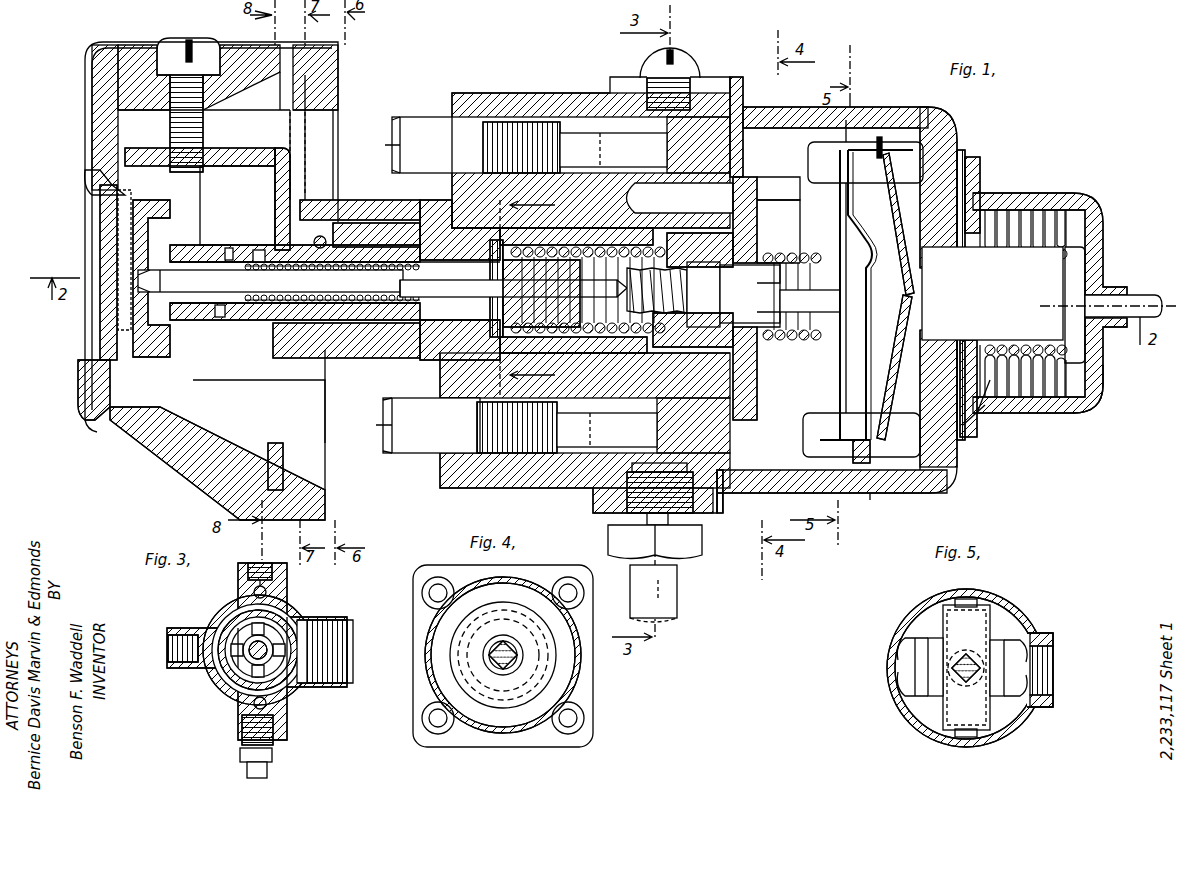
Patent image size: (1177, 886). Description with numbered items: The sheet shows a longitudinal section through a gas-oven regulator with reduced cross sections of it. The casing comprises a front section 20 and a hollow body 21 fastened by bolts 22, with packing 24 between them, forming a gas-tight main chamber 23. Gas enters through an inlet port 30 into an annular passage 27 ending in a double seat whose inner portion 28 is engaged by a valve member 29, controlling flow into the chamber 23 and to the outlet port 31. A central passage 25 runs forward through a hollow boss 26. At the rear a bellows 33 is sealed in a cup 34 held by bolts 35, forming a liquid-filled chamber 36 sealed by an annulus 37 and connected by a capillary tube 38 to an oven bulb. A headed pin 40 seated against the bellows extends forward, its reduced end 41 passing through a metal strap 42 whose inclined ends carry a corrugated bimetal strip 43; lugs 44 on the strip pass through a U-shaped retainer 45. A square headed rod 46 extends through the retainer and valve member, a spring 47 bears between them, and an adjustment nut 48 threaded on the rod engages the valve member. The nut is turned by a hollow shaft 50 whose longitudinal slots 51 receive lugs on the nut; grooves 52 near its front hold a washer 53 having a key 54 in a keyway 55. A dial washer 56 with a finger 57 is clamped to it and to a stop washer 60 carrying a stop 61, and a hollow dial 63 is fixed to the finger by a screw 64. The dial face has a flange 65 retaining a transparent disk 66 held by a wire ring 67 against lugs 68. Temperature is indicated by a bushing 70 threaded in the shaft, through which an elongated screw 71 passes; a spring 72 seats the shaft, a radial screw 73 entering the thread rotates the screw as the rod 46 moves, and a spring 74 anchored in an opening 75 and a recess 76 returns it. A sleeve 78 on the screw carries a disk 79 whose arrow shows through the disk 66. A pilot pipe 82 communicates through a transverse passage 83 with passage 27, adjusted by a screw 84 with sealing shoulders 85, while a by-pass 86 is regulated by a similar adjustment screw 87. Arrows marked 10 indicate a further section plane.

In FIG. 1, the passage 10 is at (532, 294).
In FIG. 1, the front section 20 is at (505, 98).
In FIG. 3, the front section 20 is at (215, 680).
In FIG. 1, the hollow body 21 is at (890, 115).
In FIG. 4, the hollow body 21 is at (575, 700).
In FIG. 5, the hollow body 21 is at (940, 735).
In FIG. 4, the bolts 22 is at (566, 727).
In FIG. 1, the main chamber 23 is at (760, 105).
In FIG. 1, the packing 24 is at (720, 513).
In FIG. 1, the central passage 25 is at (548, 345).
In FIG. 1, the hollow boss 26 is at (378, 330).
In FIG. 1, the annular passage 27 is at (700, 180).
In FIG. 3, the annular passage 27 is at (290, 675).
In FIG. 4, the annular passage 27 is at (555, 678).
In FIG. 1, the inner annular portion 28 is at (760, 373).
In FIG. 4, the inner annular portion 28 is at (540, 658).
In FIG. 1, the valve member 29 is at (758, 206).
In FIG. 4, the valve member 29 is at (483, 698).
In FIG. 3, the inlet port 30 is at (350, 635).
In FIG. 5, the outlet port 31 is at (1053, 640).
In FIG. 1, the bellows 33 is at (1050, 395).
In FIG. 1, the cup 34 is at (1065, 205).
In FIG. 1, the bolts 35 is at (980, 430).
In FIG. 1, the expansible and contractible chamber 36 is at (1100, 380).
In FIG. 1, the annulus 37 is at (962, 155).
In FIG. 1, the capillary tube 38 is at (1140, 295).
In FIG. 1, the headed pin 40 is at (1035, 205).
In FIG. 1, the reduced end 41 is at (900, 290).
In FIG. 1, the metal strap 42 is at (880, 448).
In FIG. 5, the metal strap 42 is at (1020, 610).
In FIG. 1, the bimetal strip 43 is at (860, 460).
In FIG. 5, the bimetal strip 43 is at (910, 650).
In FIG. 1, the lugs 44 is at (866, 108).
In FIG. 1, the U-shaped retainer 45 is at (838, 394).
In FIG. 5, the U-shaped retainer 45 is at (975, 710).
In FIG. 1, the square headed rod 46 is at (812, 265).
In FIG. 4, the square headed rod 46 is at (490, 660).
In FIG. 5, the square headed rod 46 is at (950, 690).
In FIG. 1, the spring 47 is at (815, 318).
In FIG. 4, the spring 47 is at (513, 668).
In FIG. 1, the adjustment nut 48 is at (742, 236).
In FIG. 3, the adjustment nut 48 is at (245, 668).
In FIG. 3, the hollow shaft 50 is at (225, 680).
In FIG. 1, the longitudinal slots 51 is at (790, 338).
In FIG. 3, the longitudinal slots 51 is at (225, 635).
In FIG. 1, the circumferential grooves 52 is at (210, 230).
In FIG. 1, the washer 53 is at (284, 360).
In FIG. 1, the key 54 is at (259, 252).
In FIG. 1, the keyway 55 is at (229, 250).
In FIG. 1, the dial washer 56 is at (278, 325).
In FIG. 1, the finger 57 is at (218, 160).
In FIG. 1, the stop washer 60 is at (350, 340).
In FIG. 1, the stop 61 is at (362, 215).
In FIG. 1, the hollow dial 63 is at (186, 452).
In FIG. 1, the screw 64 is at (165, 55).
In FIG. 1, the flange 65 is at (85, 362).
In FIG. 1, the transparent disk 66 is at (100, 218).
In FIG. 1, the wire ring 67 is at (88, 190).
In FIG. 1, the lugs 68 is at (112, 150).
In FIG. 1, the bushing 70 is at (452, 345).
In FIG. 1, the elongated screw 71 is at (228, 335).
In FIG. 1, the spring 72 is at (603, 170).
In FIG. 1, the screw 73 is at (470, 335).
In FIG. 1, the spring 74 is at (305, 185).
In FIG. 1, the transverse opening 75 is at (228, 300).
In FIG. 1, the recess 76 is at (385, 325).
In FIG. 1, the metal sleeve 78 is at (190, 318).
In FIG. 1, the disk 79 is at (125, 333).
In FIG. 1, the pipe 82 is at (678, 600).
In FIG. 3, the pipe 82 is at (270, 768).
In FIG. 1, the transverse passage 83 is at (660, 460).
In FIG. 3, the transverse passage 83 is at (278, 725).
In FIG. 1, the screw 84 is at (468, 432).
In FIG. 1, the shoulder 85 is at (512, 435).
In FIG. 1, the by-pass 86 is at (655, 140).
In FIG. 3, the by-pass 86 is at (238, 593).
In FIG. 1, the adjustment screw 87 is at (478, 120).